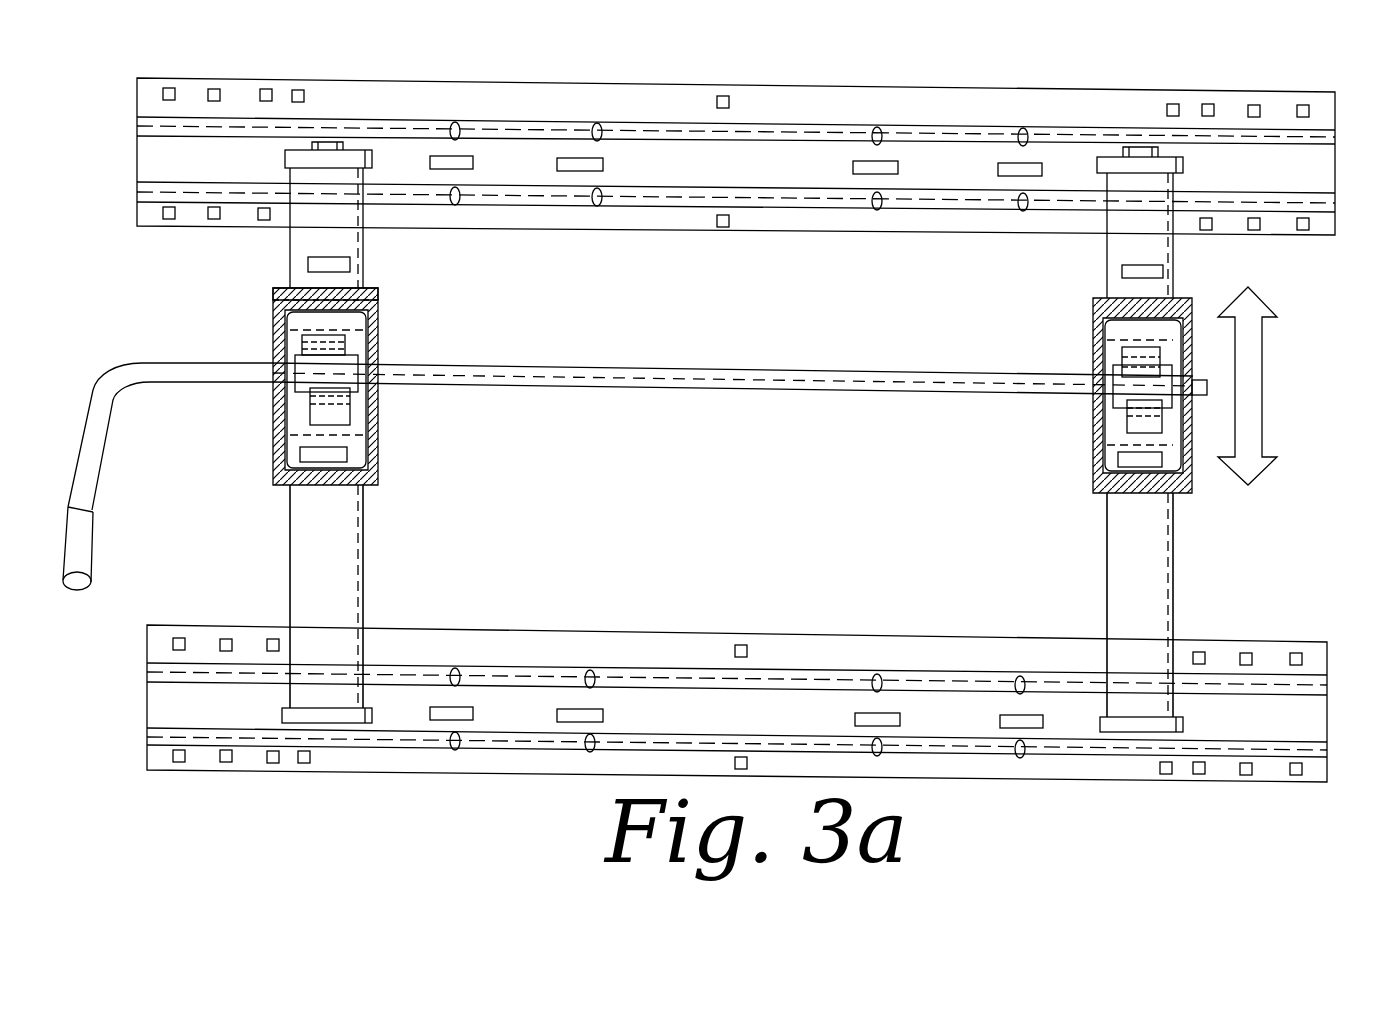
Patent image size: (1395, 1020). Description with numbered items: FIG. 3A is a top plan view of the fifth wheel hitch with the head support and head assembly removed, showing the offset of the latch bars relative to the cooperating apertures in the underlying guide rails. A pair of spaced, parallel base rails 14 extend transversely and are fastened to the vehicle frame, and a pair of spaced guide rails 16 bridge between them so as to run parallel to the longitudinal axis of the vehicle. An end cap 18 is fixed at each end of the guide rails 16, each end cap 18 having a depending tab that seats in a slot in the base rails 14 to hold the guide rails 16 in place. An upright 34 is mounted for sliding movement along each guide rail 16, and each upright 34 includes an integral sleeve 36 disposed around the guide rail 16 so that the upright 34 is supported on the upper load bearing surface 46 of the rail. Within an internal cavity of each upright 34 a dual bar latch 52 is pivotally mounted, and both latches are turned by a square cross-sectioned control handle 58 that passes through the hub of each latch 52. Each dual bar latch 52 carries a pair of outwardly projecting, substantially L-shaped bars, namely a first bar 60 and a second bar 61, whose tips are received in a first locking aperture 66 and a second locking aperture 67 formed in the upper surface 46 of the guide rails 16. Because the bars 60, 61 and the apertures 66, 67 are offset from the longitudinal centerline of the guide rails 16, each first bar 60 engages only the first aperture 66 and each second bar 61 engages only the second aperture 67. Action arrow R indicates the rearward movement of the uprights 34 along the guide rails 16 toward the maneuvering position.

The base rails 14 is at (677, 222).
The guide rails 16 is at (288, 565).
The end cap 18 is at (358, 160).
The upright 34 is at (378, 302).
The sleeve 36 is at (285, 300).
The upper load bearing surface 46 is at (343, 602).
The dual bar latch 52 is at (312, 378).
The control handle 58 is at (603, 376).
The first bar 60 is at (338, 422).
The second bar 61 is at (335, 350).
The first locking aperture 66 is at (340, 458).
The second locking aperture 67 is at (340, 264).
The action arrow R is at (1283, 360).